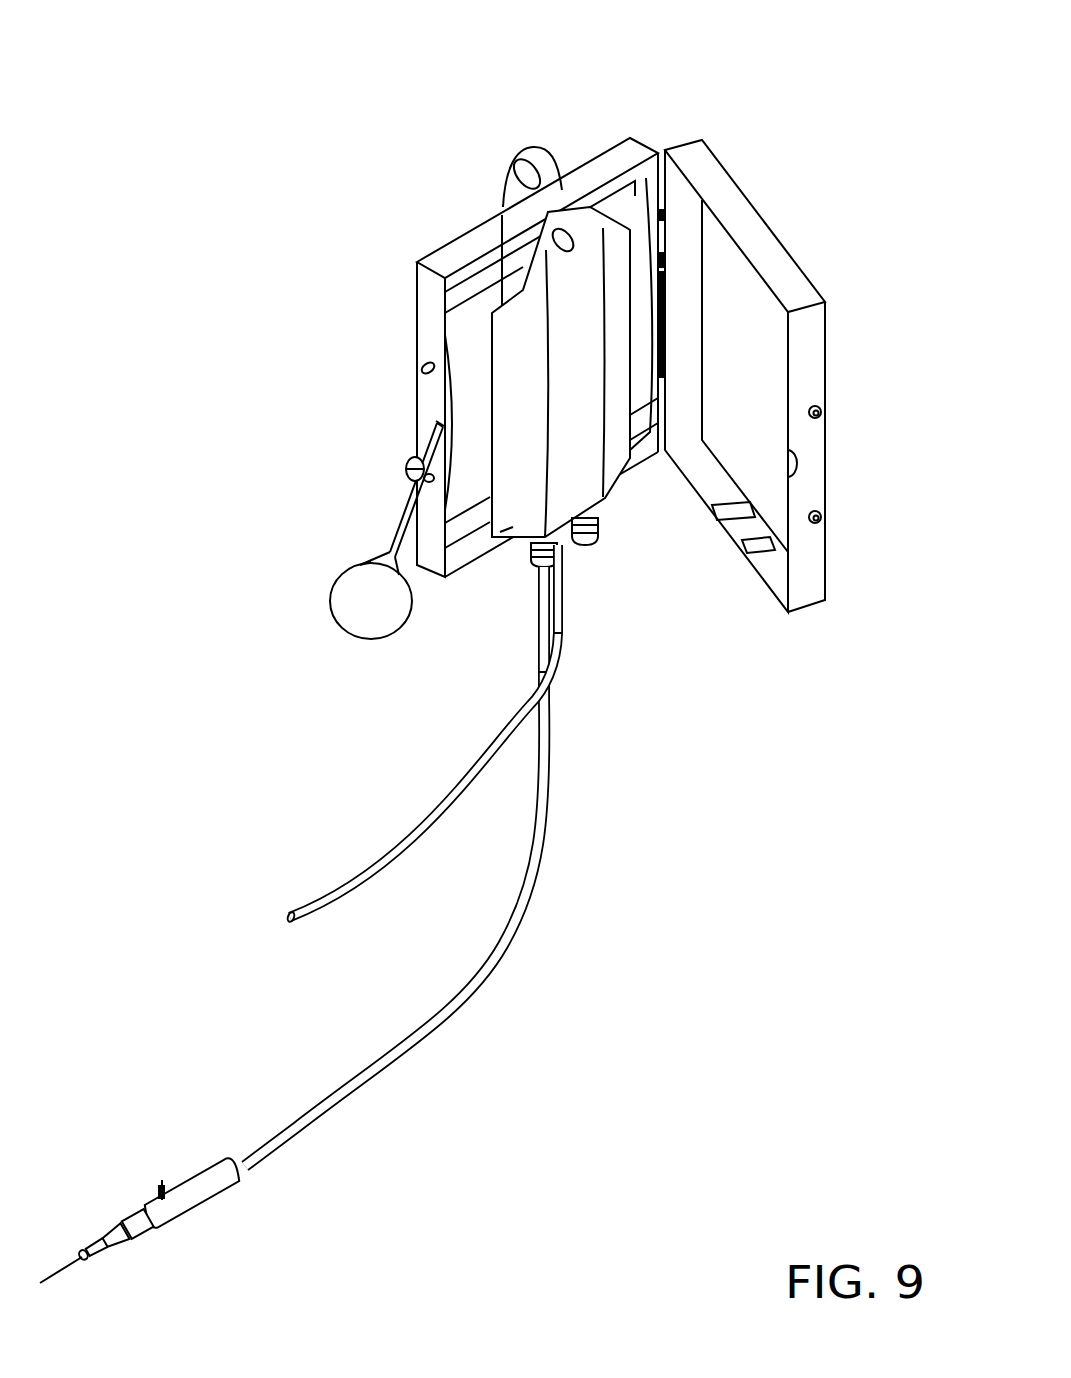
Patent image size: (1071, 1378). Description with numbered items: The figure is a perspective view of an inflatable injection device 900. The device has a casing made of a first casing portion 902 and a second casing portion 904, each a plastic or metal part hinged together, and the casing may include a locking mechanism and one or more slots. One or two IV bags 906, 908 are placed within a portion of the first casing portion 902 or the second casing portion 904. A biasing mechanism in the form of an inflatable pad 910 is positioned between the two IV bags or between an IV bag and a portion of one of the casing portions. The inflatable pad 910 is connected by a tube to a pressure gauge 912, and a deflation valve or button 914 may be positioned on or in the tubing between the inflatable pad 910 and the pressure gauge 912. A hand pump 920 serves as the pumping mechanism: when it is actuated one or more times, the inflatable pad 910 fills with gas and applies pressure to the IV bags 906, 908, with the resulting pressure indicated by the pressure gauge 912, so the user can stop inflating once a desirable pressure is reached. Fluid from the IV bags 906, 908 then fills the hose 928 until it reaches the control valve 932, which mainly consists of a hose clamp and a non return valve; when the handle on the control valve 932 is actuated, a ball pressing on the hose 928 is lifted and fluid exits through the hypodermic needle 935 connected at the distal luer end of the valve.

The inflatable injection device 900 is at (226, 93).
The first casing portion 902 is at (429, 259).
The second casing portion 904 is at (732, 192).
The IV bag 906 is at (590, 497).
The IV bag 908 is at (517, 243).
The inflatable pad 910 is at (467, 364).
The pressure gauge 912 is at (410, 468).
The deflating button 914 is at (443, 417).
The hand pump 920 is at (330, 597).
The hose 928 is at (545, 867).
The control valve 932 is at (147, 1170).
The hypodermic needle 935 is at (50, 1267).